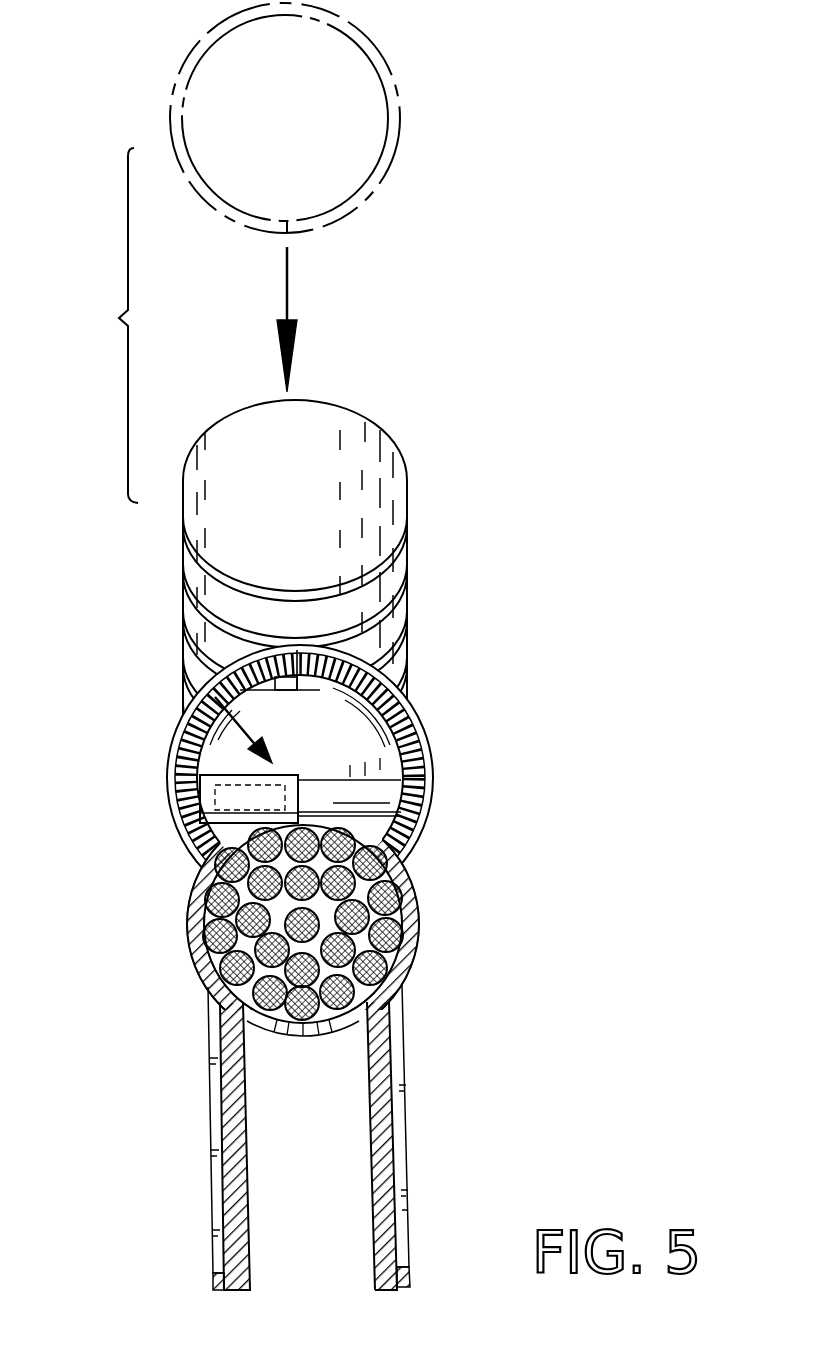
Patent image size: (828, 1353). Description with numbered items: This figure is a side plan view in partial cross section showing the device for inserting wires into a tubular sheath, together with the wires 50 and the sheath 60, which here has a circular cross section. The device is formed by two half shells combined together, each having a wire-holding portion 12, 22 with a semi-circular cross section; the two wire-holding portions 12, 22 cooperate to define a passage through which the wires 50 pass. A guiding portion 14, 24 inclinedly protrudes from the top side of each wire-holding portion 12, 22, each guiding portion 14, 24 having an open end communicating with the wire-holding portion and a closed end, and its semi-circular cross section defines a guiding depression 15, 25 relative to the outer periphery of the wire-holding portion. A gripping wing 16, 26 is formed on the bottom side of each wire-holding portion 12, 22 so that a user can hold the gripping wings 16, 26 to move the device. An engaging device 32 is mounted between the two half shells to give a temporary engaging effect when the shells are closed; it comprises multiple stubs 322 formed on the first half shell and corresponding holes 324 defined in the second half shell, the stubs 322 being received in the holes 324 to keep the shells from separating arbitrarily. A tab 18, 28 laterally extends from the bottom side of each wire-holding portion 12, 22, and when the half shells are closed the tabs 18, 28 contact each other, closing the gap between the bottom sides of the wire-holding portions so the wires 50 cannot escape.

The wire-holding portion 12 is at (413, 937).
The guiding portion 14 is at (412, 758).
The guiding depression 15 is at (420, 840).
The gripping wing 16 is at (393, 1163).
The tab 18 is at (357, 1015).
The wire-holding portion 22 is at (190, 943).
The guiding portion 24 is at (190, 797).
The guiding depression 25 is at (193, 860).
The gripping wing 26 is at (212, 1097).
The tab 28 is at (283, 1020).
The engaging device 32 is at (215, 692).
The wires 50 is at (415, 888).
The sheath 60 is at (372, 438).
The stubs 322 is at (278, 800).
The holes 324 is at (230, 795).